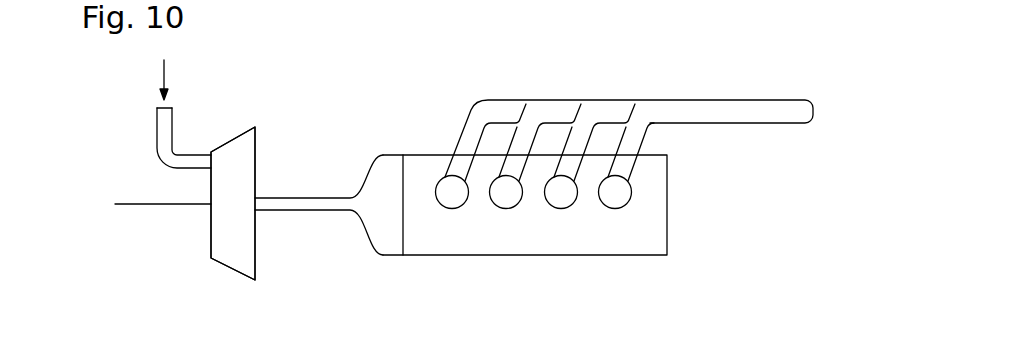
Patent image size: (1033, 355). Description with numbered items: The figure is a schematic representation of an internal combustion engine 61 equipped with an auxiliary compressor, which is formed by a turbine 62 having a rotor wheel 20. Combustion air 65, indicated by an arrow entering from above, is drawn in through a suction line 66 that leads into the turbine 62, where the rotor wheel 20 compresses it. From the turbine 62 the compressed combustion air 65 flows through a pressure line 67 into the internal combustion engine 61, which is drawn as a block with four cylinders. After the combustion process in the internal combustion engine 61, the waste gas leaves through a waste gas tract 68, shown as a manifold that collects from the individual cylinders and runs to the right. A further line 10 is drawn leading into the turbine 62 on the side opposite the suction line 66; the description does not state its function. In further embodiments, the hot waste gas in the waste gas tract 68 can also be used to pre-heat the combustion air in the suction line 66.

The drive shaft 10 is at (160, 205).
The rotor wheel 20 is at (220, 266).
The turbine 62 is at (233, 203).
The combustion air 65 is at (164, 77).
The suction line 66 is at (163, 128).
The pressure line 67 is at (313, 203).
The internal combustion engine 61 is at (417, 172).
The waste gas tract 68 is at (708, 113).